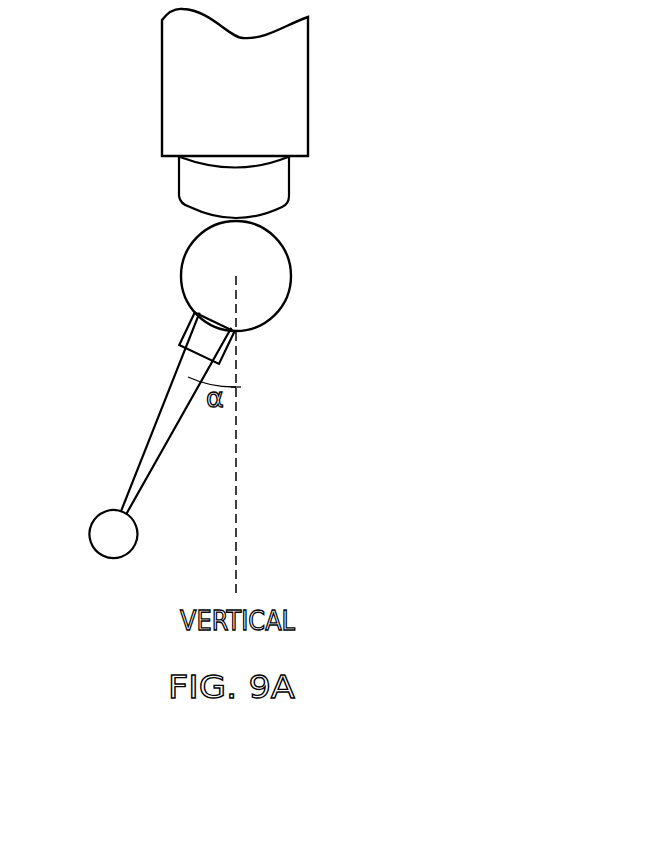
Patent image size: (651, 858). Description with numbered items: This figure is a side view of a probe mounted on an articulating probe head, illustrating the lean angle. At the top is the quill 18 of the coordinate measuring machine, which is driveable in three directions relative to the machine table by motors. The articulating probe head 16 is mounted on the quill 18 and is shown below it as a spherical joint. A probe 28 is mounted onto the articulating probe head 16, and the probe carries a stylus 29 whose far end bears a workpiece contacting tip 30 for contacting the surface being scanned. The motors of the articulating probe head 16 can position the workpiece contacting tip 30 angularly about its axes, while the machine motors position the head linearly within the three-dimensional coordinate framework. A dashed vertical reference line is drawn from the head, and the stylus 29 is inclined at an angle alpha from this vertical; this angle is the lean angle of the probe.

The quill 18 is at (297, 97).
The articulating probe head 16 is at (304, 236).
The probe 28 is at (190, 325).
The stylus 29 is at (166, 415).
The workpiece contacting tip 30 is at (104, 535).